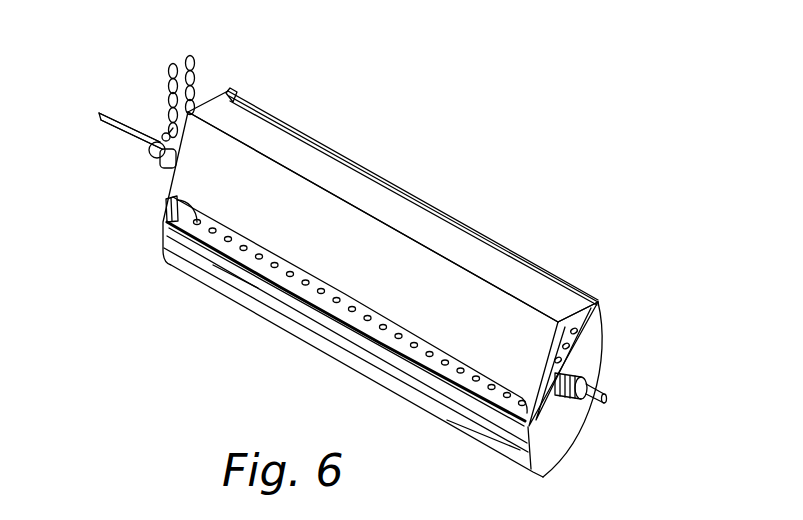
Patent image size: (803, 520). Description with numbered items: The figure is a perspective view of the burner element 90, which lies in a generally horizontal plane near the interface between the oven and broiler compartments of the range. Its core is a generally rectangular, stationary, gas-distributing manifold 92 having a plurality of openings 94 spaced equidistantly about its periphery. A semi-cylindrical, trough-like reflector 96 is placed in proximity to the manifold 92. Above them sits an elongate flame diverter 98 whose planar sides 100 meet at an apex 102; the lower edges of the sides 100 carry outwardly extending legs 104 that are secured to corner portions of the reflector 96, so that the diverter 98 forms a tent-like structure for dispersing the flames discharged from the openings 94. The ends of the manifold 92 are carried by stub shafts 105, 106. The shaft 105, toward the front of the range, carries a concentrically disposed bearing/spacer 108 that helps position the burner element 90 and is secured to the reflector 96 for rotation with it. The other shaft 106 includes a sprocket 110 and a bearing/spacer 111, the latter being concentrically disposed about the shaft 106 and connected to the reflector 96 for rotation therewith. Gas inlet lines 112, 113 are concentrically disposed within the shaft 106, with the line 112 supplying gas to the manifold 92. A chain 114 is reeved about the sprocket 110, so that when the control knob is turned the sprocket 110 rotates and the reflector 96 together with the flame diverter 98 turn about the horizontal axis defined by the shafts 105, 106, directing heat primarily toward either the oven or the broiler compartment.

The burner element 90 is at (464, 201).
The gas-distributing manifold 92 is at (312, 296).
The openings 94 is at (430, 356).
The trough-like reflector 96 is at (423, 403).
The flame diverter 98 is at (550, 310).
The planar sides 100 is at (182, 182).
The apex 102 is at (307, 182).
The legs 104 is at (228, 91).
The stub shaft 105 is at (604, 393).
The stub shaft 106 is at (158, 143).
The bearing/spacer 108 is at (582, 375).
The sprocket 110 is at (160, 158).
The bearing/spacer 111 is at (163, 130).
The gas inlet line 112 is at (100, 130).
The gas inlet line 113 is at (113, 113).
The chain 114 is at (173, 62).